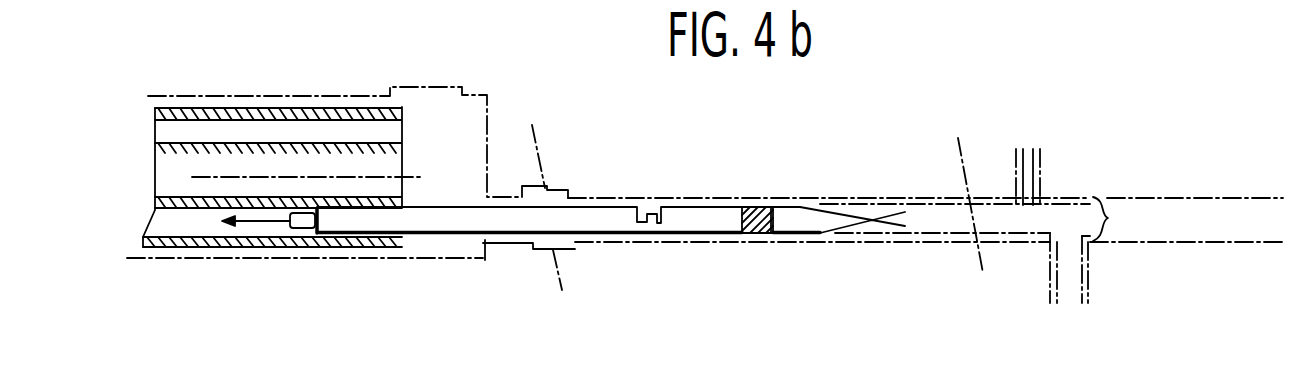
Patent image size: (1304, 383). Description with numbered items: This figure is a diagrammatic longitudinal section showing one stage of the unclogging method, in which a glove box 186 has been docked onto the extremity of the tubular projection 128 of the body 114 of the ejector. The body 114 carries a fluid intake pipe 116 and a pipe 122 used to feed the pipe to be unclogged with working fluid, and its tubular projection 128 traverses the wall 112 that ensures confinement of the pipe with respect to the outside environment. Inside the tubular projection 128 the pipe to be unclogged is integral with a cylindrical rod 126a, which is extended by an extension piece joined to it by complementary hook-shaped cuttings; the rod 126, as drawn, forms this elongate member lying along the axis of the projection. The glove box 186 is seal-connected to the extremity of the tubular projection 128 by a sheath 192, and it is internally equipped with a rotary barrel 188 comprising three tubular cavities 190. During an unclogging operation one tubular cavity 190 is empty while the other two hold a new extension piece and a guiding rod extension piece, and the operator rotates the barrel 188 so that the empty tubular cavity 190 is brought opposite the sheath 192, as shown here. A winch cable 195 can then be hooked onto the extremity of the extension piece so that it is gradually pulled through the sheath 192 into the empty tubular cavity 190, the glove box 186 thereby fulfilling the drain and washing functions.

The wall 112 is at (747, 150).
The body 114 is at (1133, 238).
The fluid intake pipe 116 is at (1053, 273).
The pipe 122 is at (1040, 160).
The rod 126 is at (596, 220).
The cylindrical rod 126a is at (706, 217).
The tubular projection 128 is at (875, 198).
The glove box 186 is at (263, 53).
The rotary barrel 188 is at (155, 157).
The tubular cavity 190 is at (322, 124).
The sheath 192 is at (508, 195).
The cable 195 is at (274, 222).